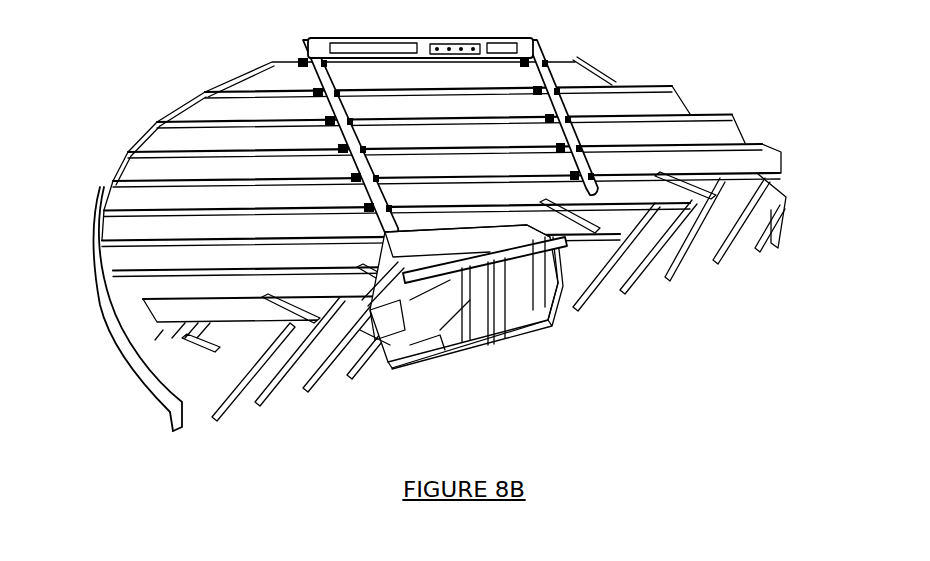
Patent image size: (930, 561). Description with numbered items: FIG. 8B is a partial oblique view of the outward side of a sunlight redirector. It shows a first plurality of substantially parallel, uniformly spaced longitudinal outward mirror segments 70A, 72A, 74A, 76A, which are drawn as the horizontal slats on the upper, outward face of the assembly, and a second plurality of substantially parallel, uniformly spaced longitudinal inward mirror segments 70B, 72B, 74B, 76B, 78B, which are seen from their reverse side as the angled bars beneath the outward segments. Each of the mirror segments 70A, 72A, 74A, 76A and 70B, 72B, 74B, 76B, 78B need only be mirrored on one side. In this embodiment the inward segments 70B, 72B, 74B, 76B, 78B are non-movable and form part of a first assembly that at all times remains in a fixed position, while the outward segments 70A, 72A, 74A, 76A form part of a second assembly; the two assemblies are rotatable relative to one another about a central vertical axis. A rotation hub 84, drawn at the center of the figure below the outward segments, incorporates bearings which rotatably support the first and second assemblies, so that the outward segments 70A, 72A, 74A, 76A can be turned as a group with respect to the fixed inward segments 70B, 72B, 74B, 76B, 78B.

The outward mirror segment 70A is at (125, 165).
The outward mirror segment 72A is at (110, 190).
The outward mirror segment 74A is at (101, 226).
The outward mirror segment 76A is at (116, 262).
The inward mirror segment 70B is at (115, 270).
The inward mirror segment 72B is at (130, 318).
The inward mirror segment 74B is at (150, 357).
The inward mirror segment 76B is at (167, 380).
The inward mirror segment 78B is at (172, 420).
The rotation hub 84 is at (532, 350).